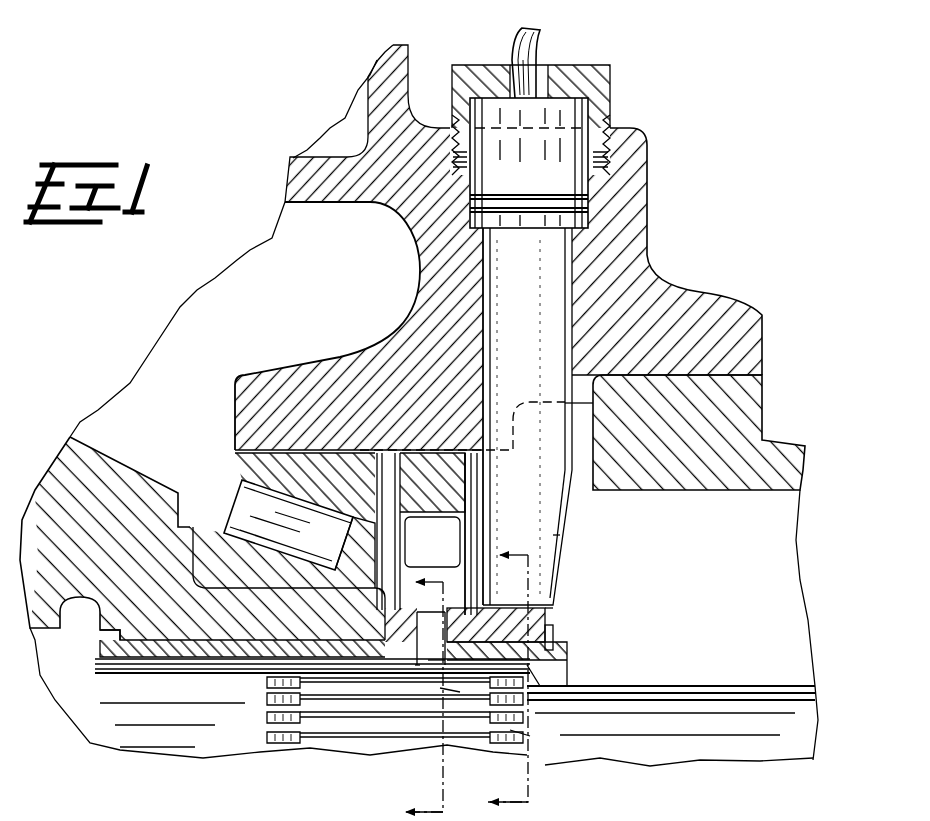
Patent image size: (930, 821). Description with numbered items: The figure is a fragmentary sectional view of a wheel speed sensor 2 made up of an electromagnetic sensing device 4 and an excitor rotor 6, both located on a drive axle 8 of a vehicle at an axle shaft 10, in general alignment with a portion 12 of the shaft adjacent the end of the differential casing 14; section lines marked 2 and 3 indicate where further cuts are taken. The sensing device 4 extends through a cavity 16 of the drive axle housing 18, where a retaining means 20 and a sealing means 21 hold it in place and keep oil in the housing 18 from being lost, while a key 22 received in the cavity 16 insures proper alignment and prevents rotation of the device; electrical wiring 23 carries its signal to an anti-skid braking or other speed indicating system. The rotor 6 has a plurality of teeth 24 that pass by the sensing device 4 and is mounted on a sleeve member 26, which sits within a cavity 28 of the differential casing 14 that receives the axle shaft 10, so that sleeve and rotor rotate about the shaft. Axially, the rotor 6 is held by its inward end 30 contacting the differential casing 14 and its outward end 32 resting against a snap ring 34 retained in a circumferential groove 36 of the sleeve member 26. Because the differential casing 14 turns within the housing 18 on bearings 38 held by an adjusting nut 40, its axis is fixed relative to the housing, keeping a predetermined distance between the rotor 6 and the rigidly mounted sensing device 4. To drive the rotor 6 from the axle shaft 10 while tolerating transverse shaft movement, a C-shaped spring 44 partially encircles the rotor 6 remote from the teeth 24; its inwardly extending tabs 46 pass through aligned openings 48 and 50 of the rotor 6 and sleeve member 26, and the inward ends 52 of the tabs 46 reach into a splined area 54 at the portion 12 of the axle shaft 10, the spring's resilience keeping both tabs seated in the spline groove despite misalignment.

The wheel speed sensor 2 is at (682, 562).
The section line 3- 3 is at (424, 697).
The electromagnetic sensing device 4 is at (560, 535).
The excitor rotor 6 is at (548, 620).
The drive axle 8 is at (783, 522).
The axle shaft 10 is at (745, 700).
The portion of axle shaft 12 is at (520, 733).
The differential casing 14 is at (145, 493).
The cavity 16 is at (565, 380).
The drive axle housing 18 is at (683, 285).
The retaining means 20 is at (598, 88).
The sealing means 21 is at (512, 210).
The key 22 is at (577, 265).
The electrical wiring 23 is at (532, 55).
The teeth 24 is at (532, 622).
The sleeve member 26 is at (108, 650).
The cavity 28 is at (118, 648).
The inward end 30 is at (400, 632).
The outward end 32 is at (535, 673).
The snap ring 34 is at (553, 633).
The circumferential groove 36 is at (567, 655).
The bearings 38 is at (220, 508).
The adjusting nut 40 is at (441, 458).
The C-shaped spring 44 is at (430, 622).
The tabs 46 is at (440, 668).
The opening 48 is at (418, 625).
The opening 50 is at (418, 666).
The inward end of tab 52 is at (447, 690).
The splined area 54 is at (345, 722).